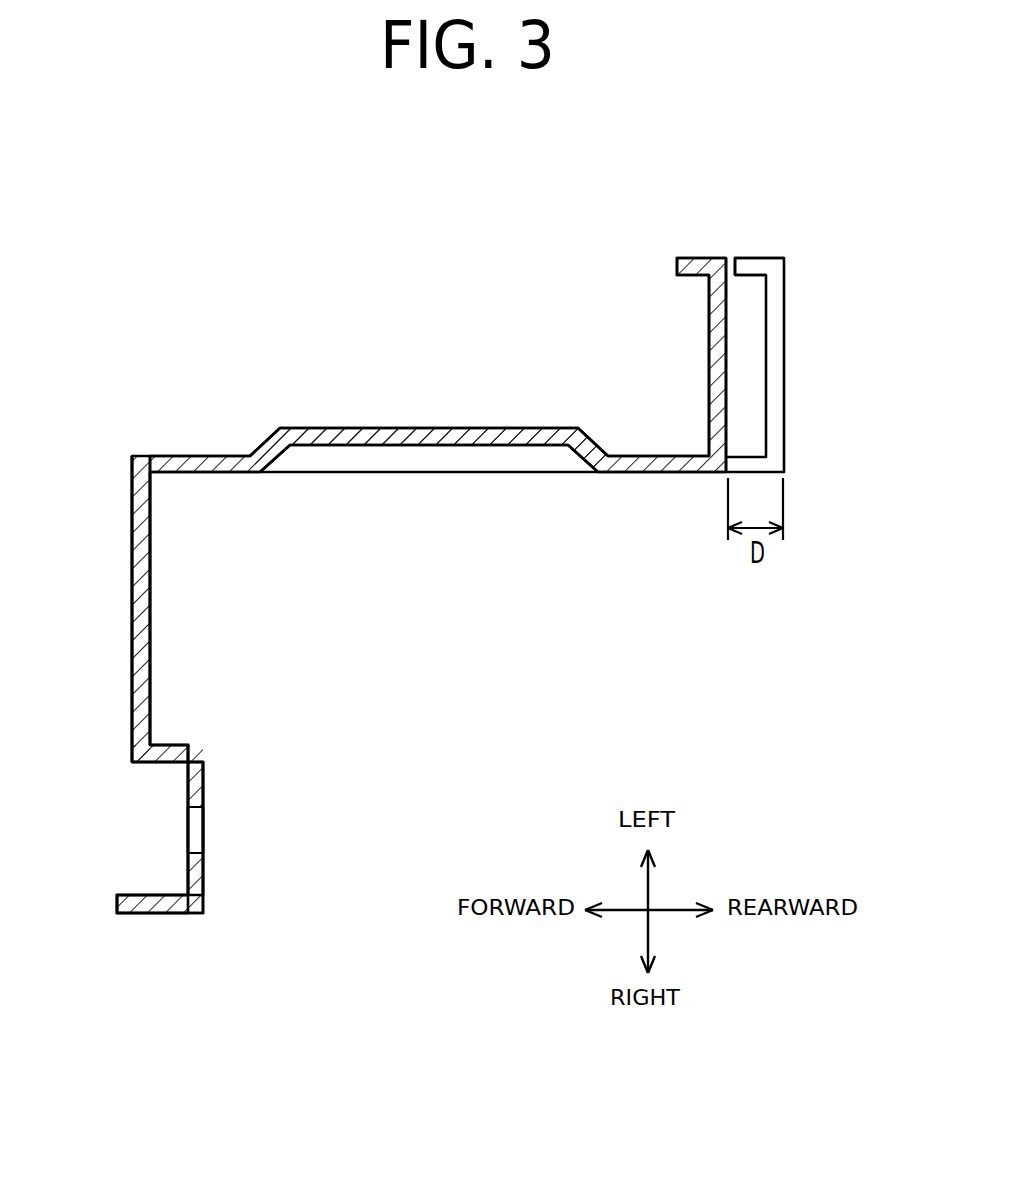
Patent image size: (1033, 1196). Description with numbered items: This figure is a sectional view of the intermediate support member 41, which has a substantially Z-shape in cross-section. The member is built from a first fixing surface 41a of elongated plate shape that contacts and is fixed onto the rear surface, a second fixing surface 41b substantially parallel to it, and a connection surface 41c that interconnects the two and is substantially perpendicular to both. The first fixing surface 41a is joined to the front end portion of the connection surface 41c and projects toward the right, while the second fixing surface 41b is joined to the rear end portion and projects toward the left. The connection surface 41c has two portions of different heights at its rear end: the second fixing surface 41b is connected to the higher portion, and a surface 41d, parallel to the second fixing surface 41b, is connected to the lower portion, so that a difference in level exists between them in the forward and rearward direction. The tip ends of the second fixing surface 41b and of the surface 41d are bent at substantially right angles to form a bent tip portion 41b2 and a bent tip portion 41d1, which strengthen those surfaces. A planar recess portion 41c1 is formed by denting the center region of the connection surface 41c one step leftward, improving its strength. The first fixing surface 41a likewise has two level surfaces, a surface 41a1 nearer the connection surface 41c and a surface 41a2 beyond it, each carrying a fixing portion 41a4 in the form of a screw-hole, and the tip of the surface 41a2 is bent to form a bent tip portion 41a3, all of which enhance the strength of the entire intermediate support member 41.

The intermediate support member 41 is at (443, 282).
The first fixing surface 41a is at (101, 455).
The surface 41a1 is at (150, 622).
The surface 41a2 is at (205, 783).
The bent tip portion 41a3 is at (172, 913).
The fixing portion 41a4 is at (197, 835).
The second fixing surface 41b is at (785, 357).
The bent tip portion 41b2 is at (752, 257).
The connection surface 41c is at (713, 490).
The recess portion 41c1 is at (360, 426).
The surface 41d is at (709, 368).
The bent tip portion 41d1 is at (697, 258).